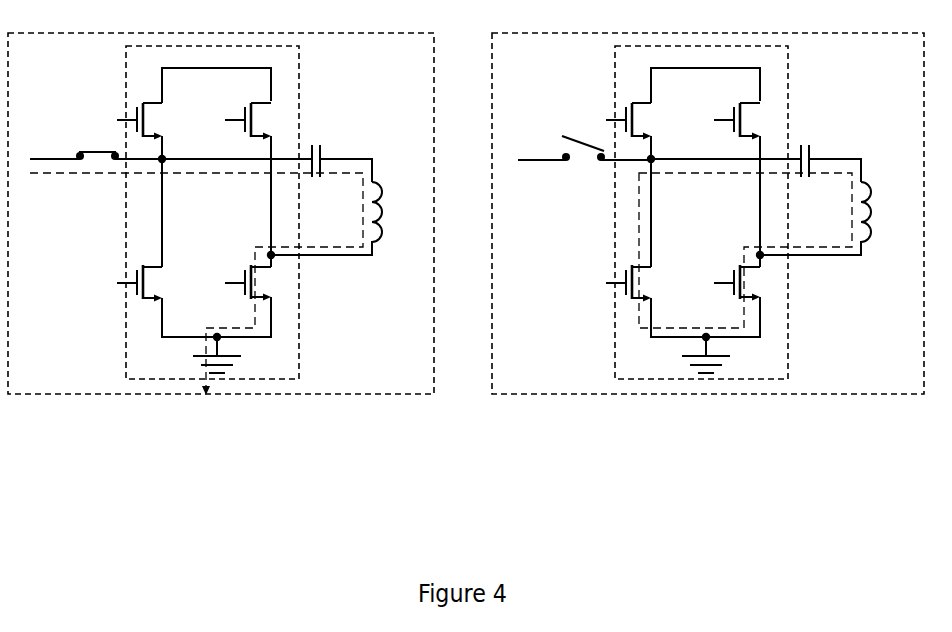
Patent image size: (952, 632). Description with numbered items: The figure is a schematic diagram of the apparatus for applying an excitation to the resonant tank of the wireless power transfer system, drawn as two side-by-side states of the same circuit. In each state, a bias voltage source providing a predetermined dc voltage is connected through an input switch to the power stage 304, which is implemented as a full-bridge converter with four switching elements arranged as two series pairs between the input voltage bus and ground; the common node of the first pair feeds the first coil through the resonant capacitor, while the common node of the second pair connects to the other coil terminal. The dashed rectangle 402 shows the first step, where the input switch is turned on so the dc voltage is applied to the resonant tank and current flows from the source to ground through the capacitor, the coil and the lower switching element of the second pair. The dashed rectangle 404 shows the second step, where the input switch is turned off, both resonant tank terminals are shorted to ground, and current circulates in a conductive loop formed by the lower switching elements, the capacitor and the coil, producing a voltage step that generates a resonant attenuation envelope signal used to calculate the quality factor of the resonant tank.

The power stage 304 is at (165, 373).
The dashed rectangle 402 is at (395, 386).
The dashed rectangle 404 is at (880, 386).